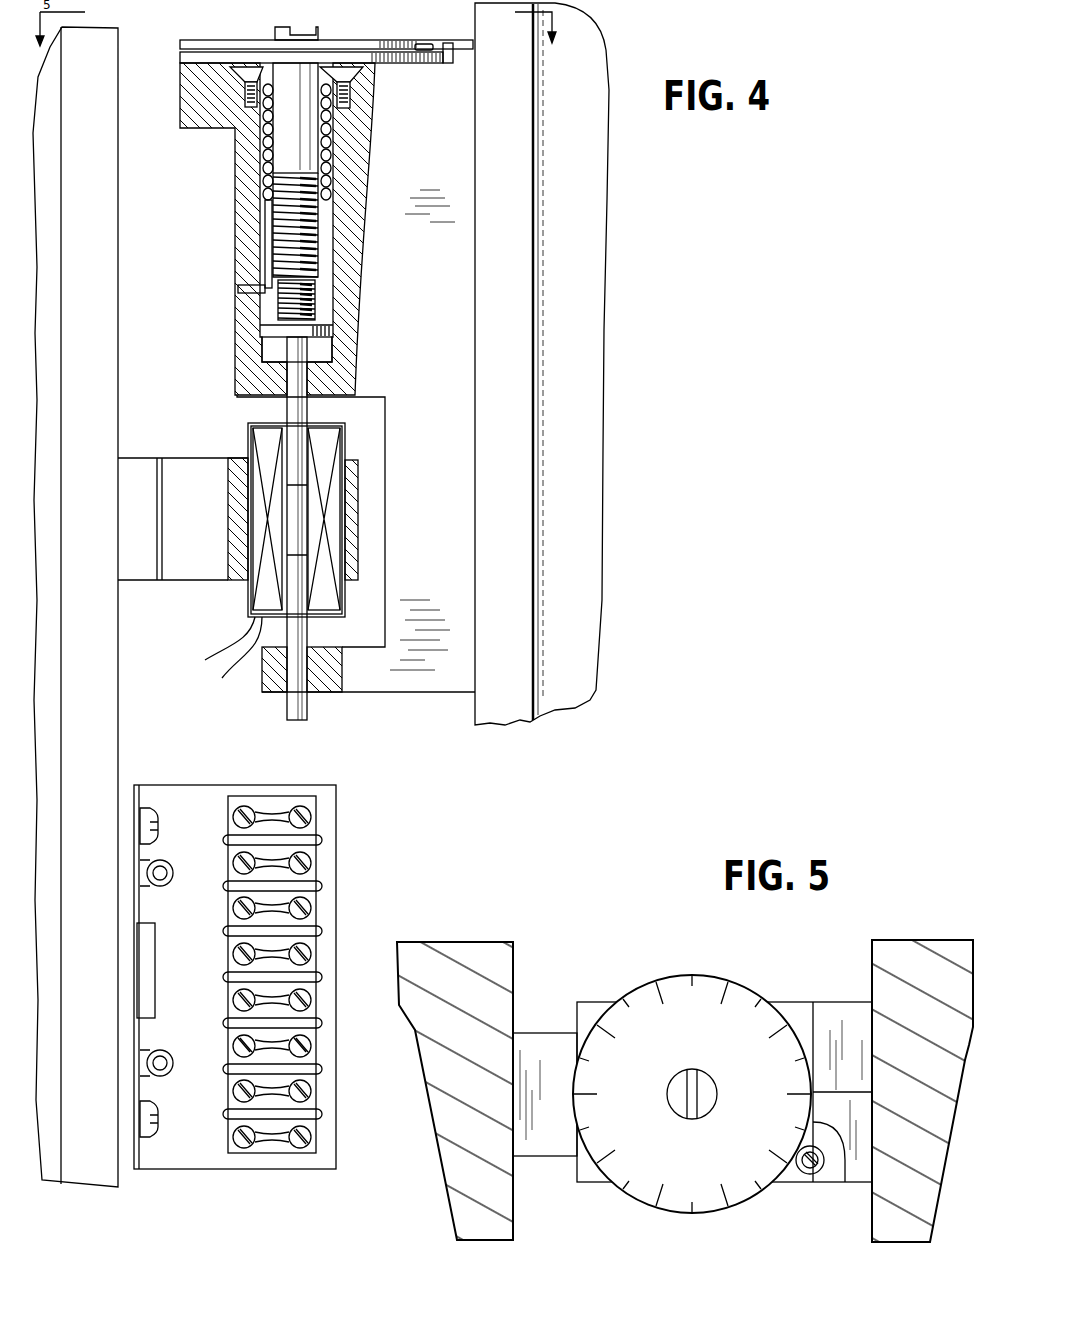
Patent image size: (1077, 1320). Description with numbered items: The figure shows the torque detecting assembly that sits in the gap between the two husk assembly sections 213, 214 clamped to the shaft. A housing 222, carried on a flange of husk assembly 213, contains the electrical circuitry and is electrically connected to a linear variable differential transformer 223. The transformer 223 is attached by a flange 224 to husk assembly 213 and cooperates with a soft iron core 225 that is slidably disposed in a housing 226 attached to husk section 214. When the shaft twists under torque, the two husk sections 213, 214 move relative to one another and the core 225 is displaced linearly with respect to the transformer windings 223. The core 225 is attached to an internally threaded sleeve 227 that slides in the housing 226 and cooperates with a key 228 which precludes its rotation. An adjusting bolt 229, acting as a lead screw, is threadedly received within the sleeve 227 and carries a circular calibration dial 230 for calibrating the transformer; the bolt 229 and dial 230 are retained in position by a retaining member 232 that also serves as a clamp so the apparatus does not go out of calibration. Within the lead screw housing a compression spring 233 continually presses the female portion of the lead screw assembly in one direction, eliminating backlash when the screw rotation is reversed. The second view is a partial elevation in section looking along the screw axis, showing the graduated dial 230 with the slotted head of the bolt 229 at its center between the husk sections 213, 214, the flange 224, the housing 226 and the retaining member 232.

In FIG. 4, the husk assembly 213 is at (100, 328).
In FIG. 5, the husk assembly 213 is at (474, 945).
In FIG. 4, the husk assembly 214 is at (570, 378).
In FIG. 5, the husk assembly 214 is at (922, 950).
In FIG. 4, the housing 222 is at (205, 785).
In FIG. 4, the linear variable differential transformer 223 is at (248, 440).
In FIG. 4, the flange 224 is at (200, 528).
In FIG. 5, the flange 224 is at (556, 1140).
In FIG. 4, the soft iron core 225 is at (290, 538).
In FIG. 4, the housing 226 is at (440, 560).
In FIG. 5, the housing 226 is at (830, 1002).
In FIG. 4, the internally threaded sleeve 227 is at (325, 293).
In FIG. 4, the key 228 is at (248, 286).
In FIG. 4, the adjusting bolt 229 is at (287, 80).
In FIG. 5, the adjusting bolt 229 is at (678, 1086).
In FIG. 4, the calibration dial 230 is at (352, 50).
In FIG. 5, the calibration dial 230 is at (682, 1178).
In FIG. 4, the retaining member 232 is at (430, 48).
In FIG. 5, the retaining member 232 is at (792, 1184).
In FIG. 4, the compression spring 233 is at (260, 140).